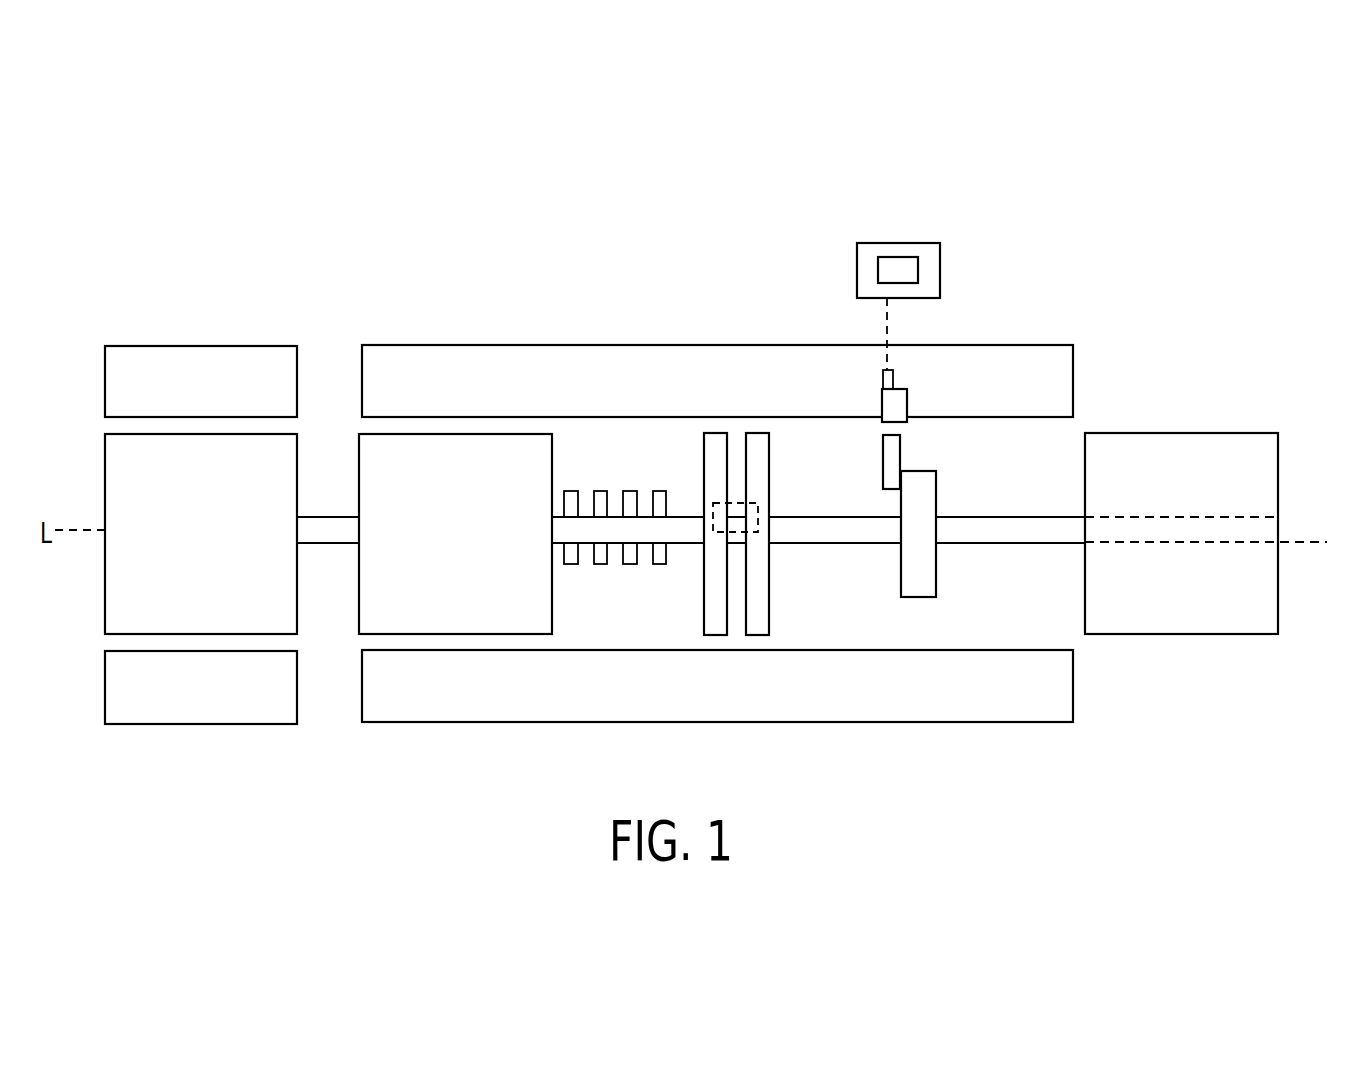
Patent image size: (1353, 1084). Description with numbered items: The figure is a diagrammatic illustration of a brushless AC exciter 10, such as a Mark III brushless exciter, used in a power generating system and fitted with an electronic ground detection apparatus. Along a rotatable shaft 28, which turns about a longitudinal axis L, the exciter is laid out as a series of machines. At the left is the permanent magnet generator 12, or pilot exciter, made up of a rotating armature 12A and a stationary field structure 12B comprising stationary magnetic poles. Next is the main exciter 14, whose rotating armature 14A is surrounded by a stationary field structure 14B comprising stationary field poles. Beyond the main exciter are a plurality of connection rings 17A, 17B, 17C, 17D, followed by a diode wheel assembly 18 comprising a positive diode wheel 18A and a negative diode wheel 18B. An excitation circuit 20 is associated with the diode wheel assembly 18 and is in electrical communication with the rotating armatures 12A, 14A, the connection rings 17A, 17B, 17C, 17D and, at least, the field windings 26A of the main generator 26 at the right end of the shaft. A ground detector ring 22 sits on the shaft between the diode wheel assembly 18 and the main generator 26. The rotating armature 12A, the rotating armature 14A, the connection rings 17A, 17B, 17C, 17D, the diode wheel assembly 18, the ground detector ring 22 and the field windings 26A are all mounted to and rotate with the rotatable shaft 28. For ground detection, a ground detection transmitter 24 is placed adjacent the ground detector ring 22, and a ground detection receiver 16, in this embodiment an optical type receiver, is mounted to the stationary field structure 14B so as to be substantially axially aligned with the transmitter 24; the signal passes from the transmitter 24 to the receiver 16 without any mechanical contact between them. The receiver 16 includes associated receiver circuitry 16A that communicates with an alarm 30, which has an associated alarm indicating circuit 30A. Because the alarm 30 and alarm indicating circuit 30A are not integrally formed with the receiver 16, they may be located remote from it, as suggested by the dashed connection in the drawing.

The brushless AC exciter 10 is at (1197, 216).
The permanent magnet generator 12 is at (201, 492).
The rotating armature 12A is at (220, 544).
The stationary field structure 12B is at (220, 397).
The main exciter 14 is at (705, 487).
The rotating armature 14A is at (473, 544).
The stationary field structure 14B is at (535, 394).
The ground detection receiver 16 is at (901, 412).
The receiver circuitry 16A is at (884, 381).
The connection ring 17A is at (571, 491).
The connection ring 17B is at (600, 565).
The connection ring 17C is at (630, 491).
The connection ring 17D is at (657, 565).
The diode wheel assembly 18 is at (747, 532).
The positive diode wheel 18A is at (714, 626).
The negative diode wheel 18B is at (758, 626).
The excitation circuit 20 is at (767, 506).
The ground detector ring 22 is at (938, 593).
The ground detection transmitter 24 is at (892, 463).
The main generator 26 is at (1198, 621).
The field windings 26A is at (1265, 527).
The rotatable shaft 28 is at (316, 545).
The alarm 30 is at (868, 273).
The alarm indicating circuit 30A is at (906, 265).